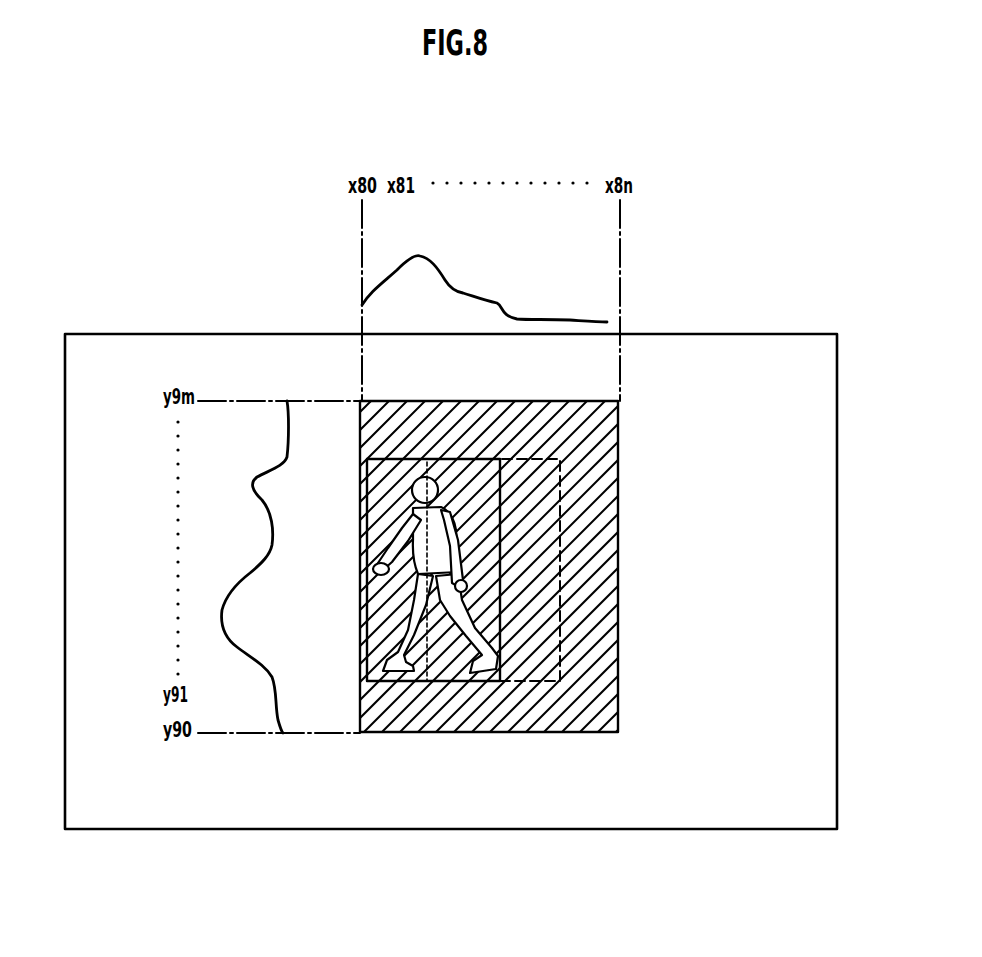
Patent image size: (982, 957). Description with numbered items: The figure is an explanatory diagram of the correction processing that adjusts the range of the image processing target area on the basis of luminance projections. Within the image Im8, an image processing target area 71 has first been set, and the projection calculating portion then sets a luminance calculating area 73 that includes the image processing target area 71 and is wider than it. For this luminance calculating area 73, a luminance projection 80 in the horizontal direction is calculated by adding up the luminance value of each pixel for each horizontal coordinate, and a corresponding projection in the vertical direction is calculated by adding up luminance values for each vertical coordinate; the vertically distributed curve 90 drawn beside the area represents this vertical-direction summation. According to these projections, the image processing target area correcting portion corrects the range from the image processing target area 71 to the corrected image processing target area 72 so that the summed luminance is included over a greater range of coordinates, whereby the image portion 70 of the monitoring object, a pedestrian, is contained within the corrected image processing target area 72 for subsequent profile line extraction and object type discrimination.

The image portion 70 is at (460, 650).
The image processing target area 71 is at (565, 480).
The corrected image processing target area 72 is at (472, 458).
The luminance calculating area 73 is at (620, 418).
The luminance projection in the horizontal direction 80 is at (456, 283).
The vertical histogram 90 is at (246, 569).
The image Im8 is at (757, 333).